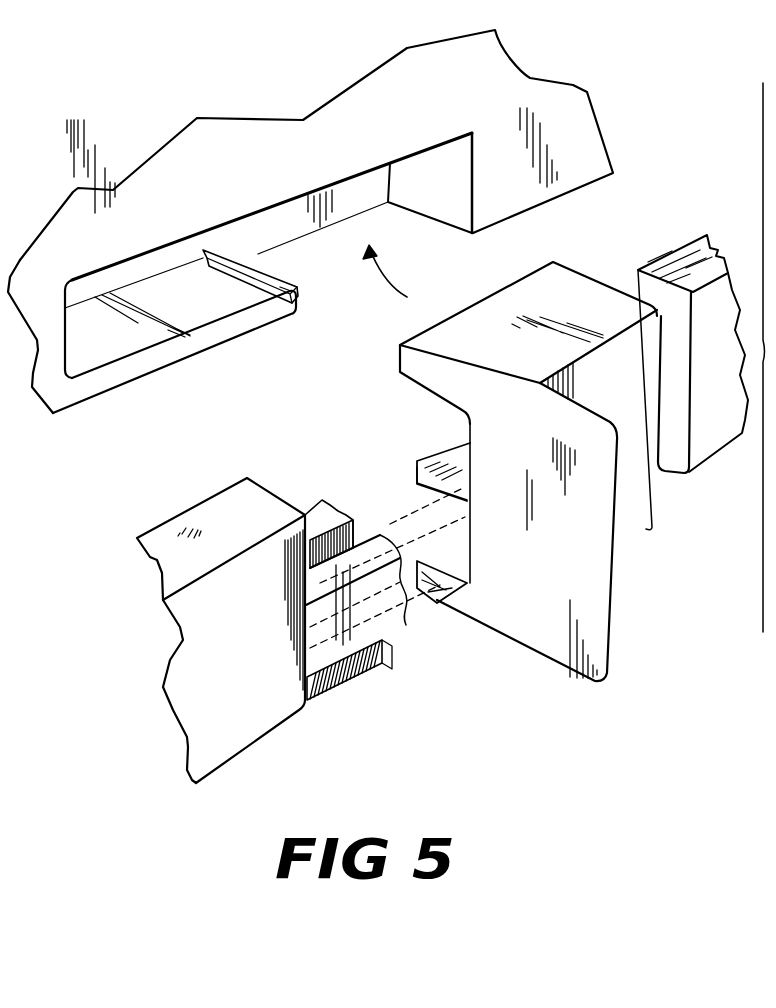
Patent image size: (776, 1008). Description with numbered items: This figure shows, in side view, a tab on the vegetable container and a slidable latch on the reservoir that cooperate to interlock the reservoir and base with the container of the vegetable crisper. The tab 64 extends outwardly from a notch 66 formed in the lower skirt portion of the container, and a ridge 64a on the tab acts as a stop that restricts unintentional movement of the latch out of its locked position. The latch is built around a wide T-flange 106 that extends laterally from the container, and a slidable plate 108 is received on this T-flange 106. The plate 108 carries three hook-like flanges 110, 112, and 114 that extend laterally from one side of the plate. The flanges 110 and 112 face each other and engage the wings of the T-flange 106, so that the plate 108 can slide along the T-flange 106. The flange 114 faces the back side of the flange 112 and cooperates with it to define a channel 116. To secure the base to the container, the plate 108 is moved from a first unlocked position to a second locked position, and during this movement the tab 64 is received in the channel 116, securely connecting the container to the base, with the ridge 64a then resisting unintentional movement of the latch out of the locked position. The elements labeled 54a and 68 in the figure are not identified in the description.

The housing wall portion 54a is at (463, 109).
The tab 64 is at (240, 323).
The ridge 64a is at (274, 275).
The notch 66 is at (400, 277).
The opening 68 is at (103, 393).
The T-flange 106 is at (353, 612).
The slidable plate 108 is at (628, 512).
The hook-like flange 110 is at (441, 592).
The hook-like flange 112 is at (427, 476).
The hook-like flange 114 is at (433, 388).
The channel 116 is at (443, 430).